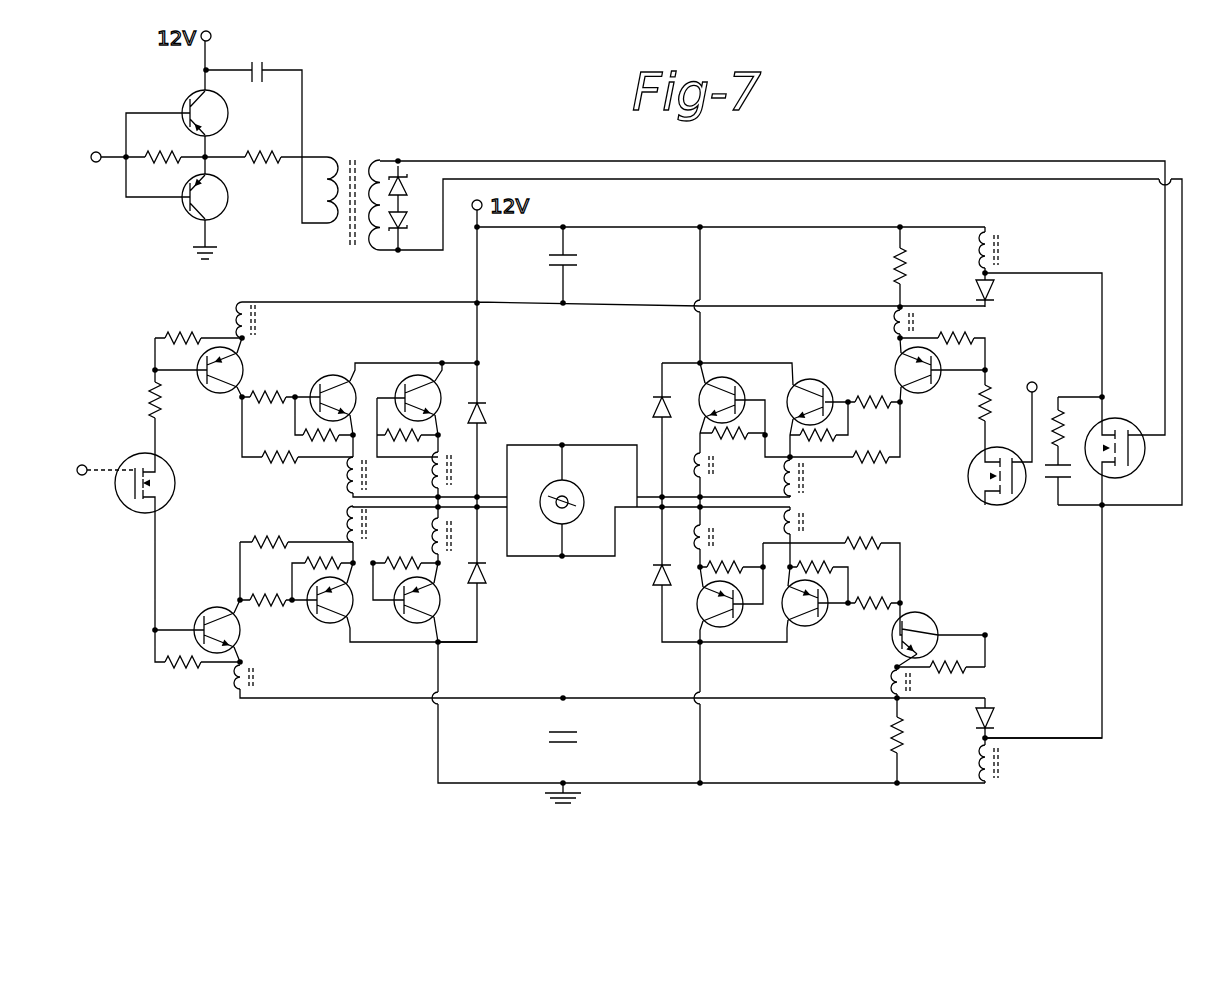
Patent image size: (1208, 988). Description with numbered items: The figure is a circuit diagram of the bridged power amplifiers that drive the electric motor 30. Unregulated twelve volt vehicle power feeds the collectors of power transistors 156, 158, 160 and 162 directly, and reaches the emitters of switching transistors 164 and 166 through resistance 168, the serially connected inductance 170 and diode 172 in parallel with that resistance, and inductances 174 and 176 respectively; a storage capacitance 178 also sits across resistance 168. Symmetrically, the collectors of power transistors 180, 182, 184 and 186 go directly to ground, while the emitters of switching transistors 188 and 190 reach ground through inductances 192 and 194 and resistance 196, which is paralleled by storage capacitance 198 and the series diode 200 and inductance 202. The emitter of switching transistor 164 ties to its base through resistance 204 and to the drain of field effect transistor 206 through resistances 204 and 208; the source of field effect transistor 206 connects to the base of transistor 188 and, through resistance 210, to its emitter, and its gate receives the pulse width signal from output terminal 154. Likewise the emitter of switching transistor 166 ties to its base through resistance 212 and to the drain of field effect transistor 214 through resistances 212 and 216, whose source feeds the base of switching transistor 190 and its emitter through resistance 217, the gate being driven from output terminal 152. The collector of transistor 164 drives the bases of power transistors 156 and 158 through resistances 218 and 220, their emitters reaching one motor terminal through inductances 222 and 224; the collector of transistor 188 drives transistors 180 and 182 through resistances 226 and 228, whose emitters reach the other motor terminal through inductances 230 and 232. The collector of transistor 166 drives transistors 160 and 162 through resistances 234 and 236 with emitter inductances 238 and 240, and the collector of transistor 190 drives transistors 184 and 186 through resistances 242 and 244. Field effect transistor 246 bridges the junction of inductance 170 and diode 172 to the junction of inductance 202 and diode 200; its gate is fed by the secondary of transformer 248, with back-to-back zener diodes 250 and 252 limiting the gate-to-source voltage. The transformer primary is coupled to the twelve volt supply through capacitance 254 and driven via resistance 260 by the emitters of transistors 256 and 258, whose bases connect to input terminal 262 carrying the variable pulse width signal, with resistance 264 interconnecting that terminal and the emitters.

The electric motor 30 is at (575, 485).
The output terminal 152 is at (1027, 382).
The output terminal 154 is at (82, 462).
The power transistor 156 is at (322, 375).
The power transistor 158 is at (412, 380).
The power transistor 160 is at (717, 377).
The power transistor 162 is at (803, 382).
The switching transistor 164 is at (207, 388).
The switching transistor 166 is at (952, 413).
The resistance 168 is at (895, 270).
The inductance 170 is at (987, 262).
The diode 172 is at (997, 290).
The inductance 174 is at (240, 310).
The inductance 176 is at (903, 325).
The storage capacitance 178 is at (583, 263).
The power transistor 180 is at (337, 620).
The power transistor 182 is at (408, 620).
The power transistor 184 is at (695, 607).
The power transistor 186 is at (822, 622).
The switching transistor 188 is at (198, 607).
The switching transistor 190 is at (952, 595).
The inductance 192 is at (242, 680).
The inductance 194 is at (897, 683).
The resistance 196 is at (892, 733).
The storage capacitance 198 is at (577, 740).
The diode 200 is at (993, 717).
The inductance 202 is at (982, 763).
The resistance 204 is at (167, 330).
The field effect transistor 206 is at (128, 512).
The resistance 208 is at (153, 395).
The resistance 210 is at (177, 670).
The resistance 212 is at (952, 337).
The field effect transistor 214 is at (1002, 510).
The resistance 216 is at (980, 413).
The resistance 217 is at (947, 677).
The resistance 218 is at (259, 394).
The resistance 220 is at (283, 440).
The inductance 222 is at (346, 474).
The inductance 224 is at (433, 470).
The resistance 226 is at (282, 575).
The resistance 228 is at (267, 537).
The inductance 230 is at (350, 523).
The inductance 232 is at (437, 533).
The resistance 234 is at (883, 467).
The resistance 236 is at (875, 408).
The inductance 238 is at (715, 462).
The inductance 240 is at (805, 477).
The resistance 242 is at (878, 540).
The resistance 244 is at (892, 597).
The field effect transistor 246 is at (1120, 420).
The transformer 248 is at (355, 150).
The zener diode 250 is at (407, 175).
The zener diode 252 is at (390, 258).
The capacitance 254 is at (257, 62).
The transistor 256 is at (187, 95).
The transistor 258 is at (228, 200).
The resistance 260 is at (283, 118).
The input terminal 262 is at (96, 165).
The resistance 264 is at (183, 148).